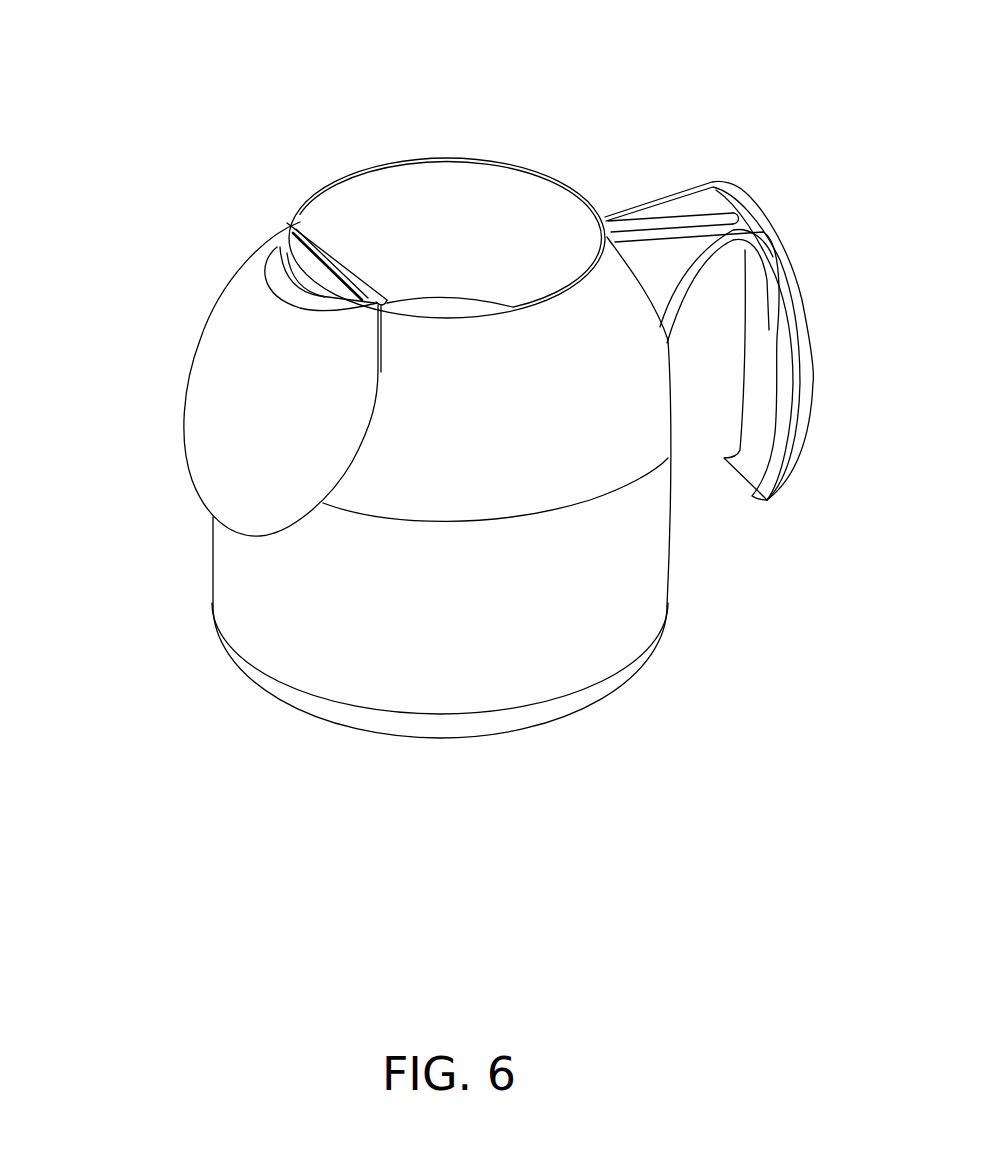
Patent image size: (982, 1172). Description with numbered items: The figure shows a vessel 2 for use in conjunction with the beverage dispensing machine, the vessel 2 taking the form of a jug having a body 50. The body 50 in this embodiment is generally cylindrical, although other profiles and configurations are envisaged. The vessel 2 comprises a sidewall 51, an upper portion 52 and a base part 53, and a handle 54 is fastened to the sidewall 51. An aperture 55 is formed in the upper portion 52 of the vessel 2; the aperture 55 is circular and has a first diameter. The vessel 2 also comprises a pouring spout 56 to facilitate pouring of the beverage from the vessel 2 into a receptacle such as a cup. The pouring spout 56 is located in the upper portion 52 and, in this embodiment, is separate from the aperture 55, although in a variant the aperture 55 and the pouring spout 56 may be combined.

The vessel 2 is at (600, 105).
The body 50 is at (652, 585).
The sidewall 51 is at (483, 598).
The upper portion 52 is at (418, 355).
The base part 53 is at (293, 693).
The handle 54 is at (741, 205).
The aperture 55 is at (402, 207).
The pouring spout 56 is at (287, 255).